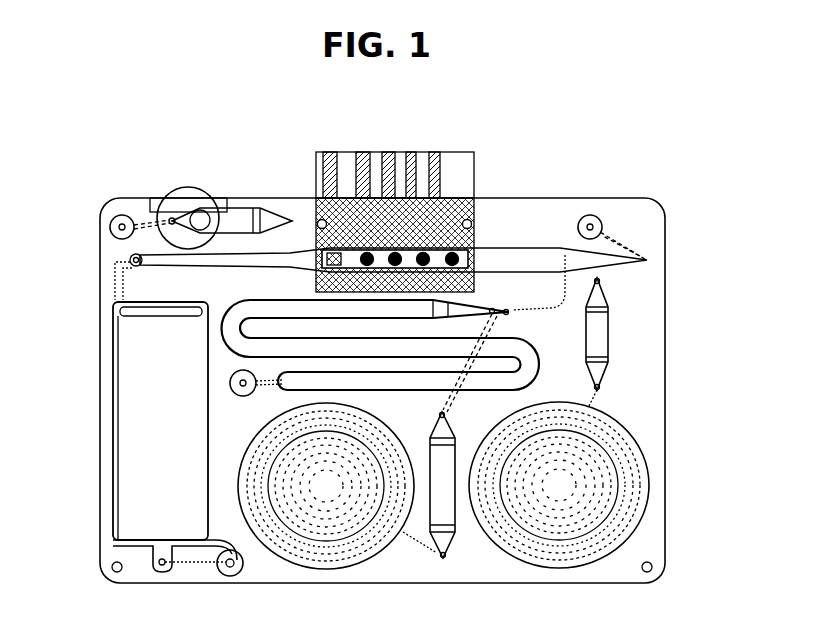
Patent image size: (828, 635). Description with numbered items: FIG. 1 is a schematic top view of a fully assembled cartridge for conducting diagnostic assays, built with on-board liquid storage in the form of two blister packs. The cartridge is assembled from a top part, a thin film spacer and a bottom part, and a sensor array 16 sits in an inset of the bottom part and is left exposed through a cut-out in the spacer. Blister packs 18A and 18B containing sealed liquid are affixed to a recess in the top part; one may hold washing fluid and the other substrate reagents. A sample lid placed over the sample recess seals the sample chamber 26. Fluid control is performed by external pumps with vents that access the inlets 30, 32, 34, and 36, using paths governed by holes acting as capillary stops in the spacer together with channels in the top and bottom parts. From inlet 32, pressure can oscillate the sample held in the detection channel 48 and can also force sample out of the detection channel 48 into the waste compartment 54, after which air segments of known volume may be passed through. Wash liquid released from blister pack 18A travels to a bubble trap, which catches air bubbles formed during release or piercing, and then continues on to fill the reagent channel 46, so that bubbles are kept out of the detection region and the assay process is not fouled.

The sensor array 16 is at (457, 181).
The blister pack 18A is at (325, 491).
The blister pack 18B is at (570, 491).
The sample chamber 26 is at (247, 215).
The inlet 30 is at (111, 227).
The inlet 32 is at (585, 219).
The inlet 34 is at (229, 381).
The inlet 36 is at (234, 549).
The reagent channel 46 is at (526, 358).
The detection channel 48 is at (508, 263).
The waste compartment 54 is at (169, 441).